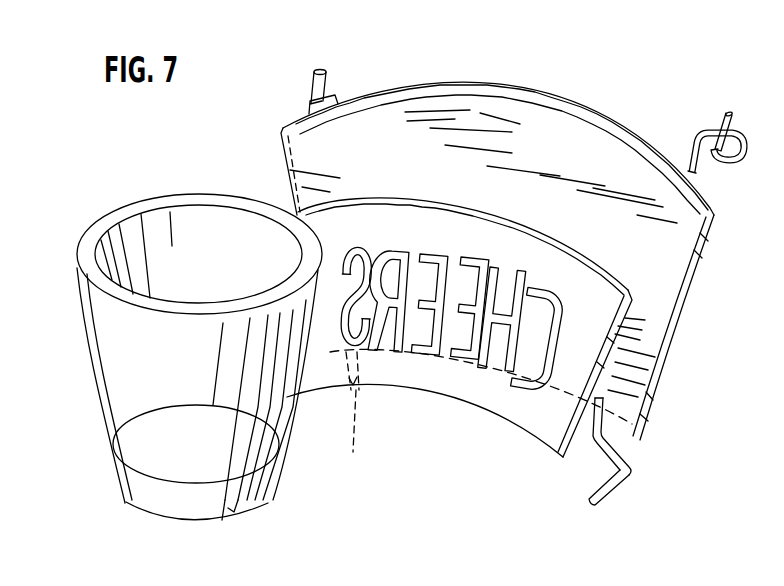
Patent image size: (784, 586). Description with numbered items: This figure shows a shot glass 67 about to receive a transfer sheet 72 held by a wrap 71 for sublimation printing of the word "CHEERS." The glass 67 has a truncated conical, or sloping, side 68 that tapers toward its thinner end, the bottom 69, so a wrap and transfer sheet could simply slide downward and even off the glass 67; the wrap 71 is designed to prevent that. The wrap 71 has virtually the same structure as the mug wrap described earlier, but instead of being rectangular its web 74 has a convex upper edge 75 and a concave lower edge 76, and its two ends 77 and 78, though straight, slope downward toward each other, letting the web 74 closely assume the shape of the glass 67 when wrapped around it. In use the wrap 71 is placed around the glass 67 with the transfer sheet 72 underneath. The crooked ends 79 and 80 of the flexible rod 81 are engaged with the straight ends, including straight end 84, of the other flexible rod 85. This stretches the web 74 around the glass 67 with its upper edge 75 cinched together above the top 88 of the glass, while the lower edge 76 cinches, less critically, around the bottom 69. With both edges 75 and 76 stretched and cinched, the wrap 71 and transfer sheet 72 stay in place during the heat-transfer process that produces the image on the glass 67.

The shot glass 67 is at (227, 500).
The sloping side 68 is at (92, 382).
The bottom 69 is at (180, 507).
The wrap 71 is at (510, 140).
The transfer sheet 72 is at (537, 422).
The web 74 is at (680, 234).
The convex upper edge 75 is at (603, 123).
The concave lower edge 76 is at (586, 398).
The end 77 is at (650, 407).
The end 78 is at (277, 163).
The crooked end 79 is at (735, 118).
The crooked end 80 is at (617, 483).
The flexible rod 81 is at (697, 157).
The straight end 84 is at (312, 82).
The flexible rod 85 is at (339, 99).
The top 88 is at (77, 252).